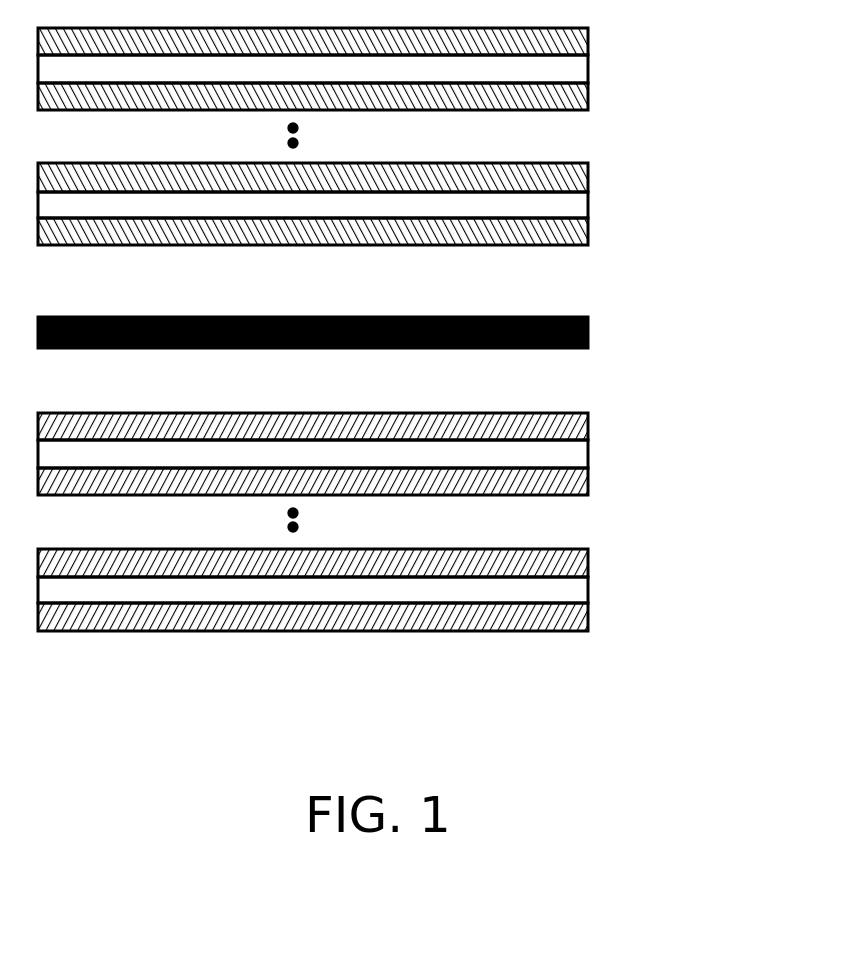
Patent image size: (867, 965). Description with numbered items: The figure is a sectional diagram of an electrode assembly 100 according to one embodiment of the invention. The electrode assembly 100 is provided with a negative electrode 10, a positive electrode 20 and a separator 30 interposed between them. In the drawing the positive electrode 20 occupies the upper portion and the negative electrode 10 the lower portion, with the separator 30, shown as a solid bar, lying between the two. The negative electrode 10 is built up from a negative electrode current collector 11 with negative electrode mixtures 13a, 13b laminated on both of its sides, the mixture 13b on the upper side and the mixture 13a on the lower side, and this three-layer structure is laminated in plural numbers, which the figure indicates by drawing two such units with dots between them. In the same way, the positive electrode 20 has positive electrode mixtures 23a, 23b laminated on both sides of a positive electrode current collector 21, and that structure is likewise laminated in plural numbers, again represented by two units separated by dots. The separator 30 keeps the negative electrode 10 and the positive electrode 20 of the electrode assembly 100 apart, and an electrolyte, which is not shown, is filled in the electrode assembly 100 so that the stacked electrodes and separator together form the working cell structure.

The electrode assembly 100 is at (423, 388).
The negative electrode 10 is at (423, 520).
The negative electrode current collector 11 is at (588, 454).
The negative electrode mixture 13a is at (588, 482).
The negative electrode mixture 13b is at (588, 426).
The positive electrode 20 is at (407, 134).
The positive electrode current collector 21 is at (588, 69).
The positive electrode mixture 23a is at (588, 96).
The positive electrode mixture 23b is at (588, 42).
The separator 30 is at (588, 333).